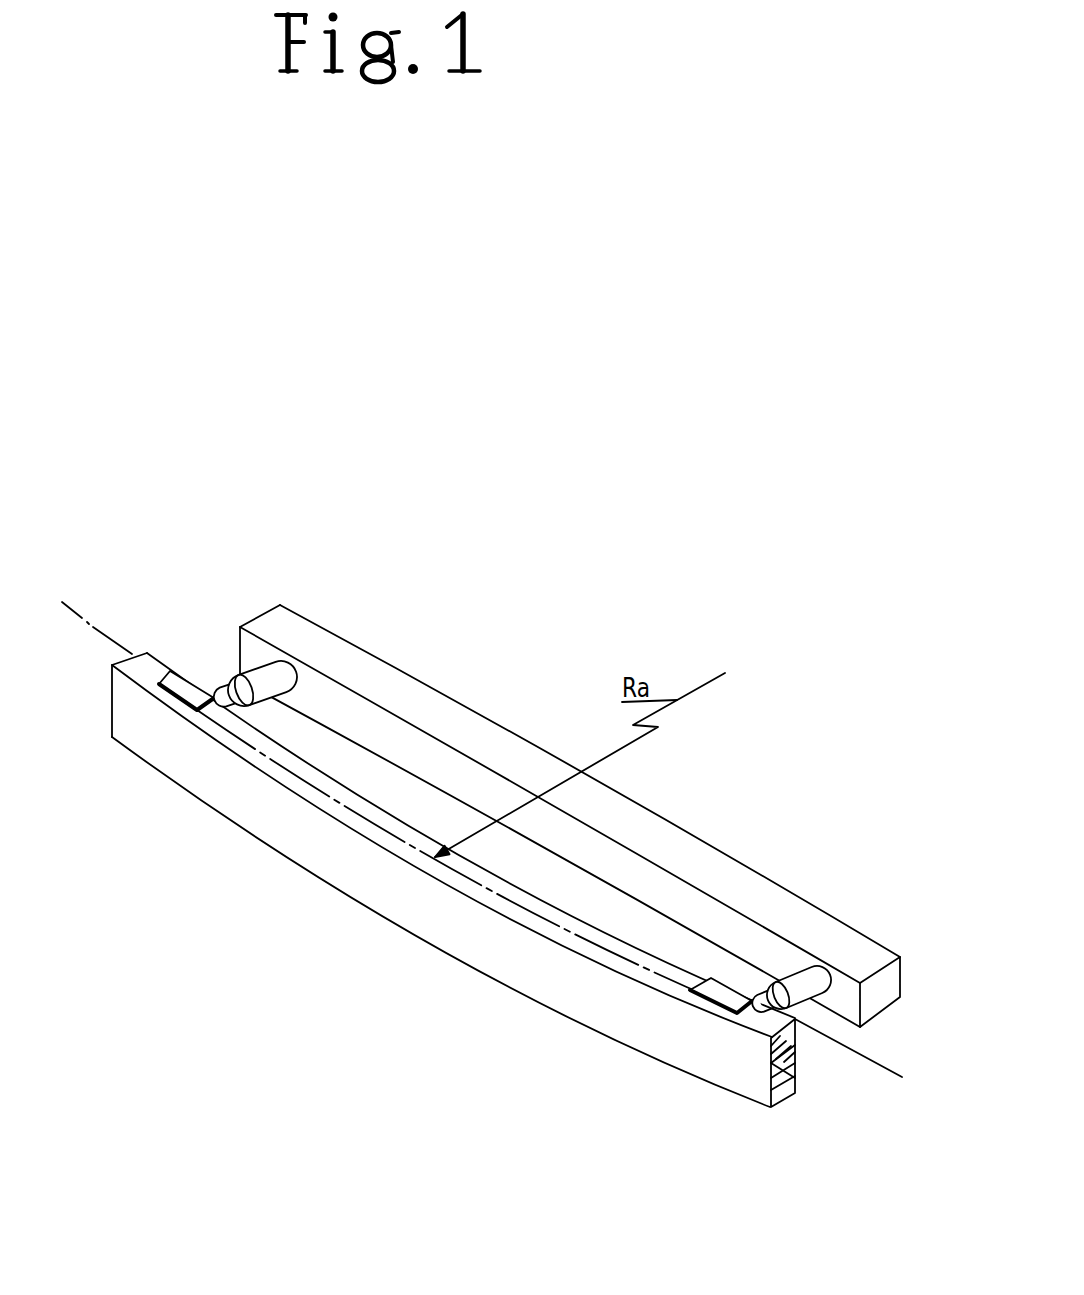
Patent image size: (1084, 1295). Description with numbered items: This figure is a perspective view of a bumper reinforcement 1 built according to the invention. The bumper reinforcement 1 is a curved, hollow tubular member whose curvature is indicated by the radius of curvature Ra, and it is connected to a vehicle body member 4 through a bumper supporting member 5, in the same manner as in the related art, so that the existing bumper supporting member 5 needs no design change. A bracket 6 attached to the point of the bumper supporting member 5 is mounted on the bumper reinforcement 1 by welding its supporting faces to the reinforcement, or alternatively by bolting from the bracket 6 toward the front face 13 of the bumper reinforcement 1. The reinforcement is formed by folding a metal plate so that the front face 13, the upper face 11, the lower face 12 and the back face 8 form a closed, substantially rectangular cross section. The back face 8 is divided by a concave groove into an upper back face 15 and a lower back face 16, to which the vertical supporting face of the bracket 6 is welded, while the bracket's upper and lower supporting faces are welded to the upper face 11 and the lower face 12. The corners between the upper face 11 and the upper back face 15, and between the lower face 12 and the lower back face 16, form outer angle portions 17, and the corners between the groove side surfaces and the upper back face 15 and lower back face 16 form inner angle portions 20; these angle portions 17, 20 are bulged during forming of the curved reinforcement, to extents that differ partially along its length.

The bumper reinforcement 1 is at (493, 880).
The vehicle body member 4 is at (625, 820).
The bumper supporting member 5 is at (253, 680).
The bracket 6 is at (185, 682).
The back face 8 is at (838, 914).
The upper back face 15 is at (768, 999).
The lower back face 16 is at (797, 1017).
The upper face 11 is at (765, 1032).
The lower face 12 is at (780, 1097).
The front face 13 is at (482, 897).
The outer angle portion 17 is at (795, 1093).
The inner angle portion 20 is at (795, 1063).